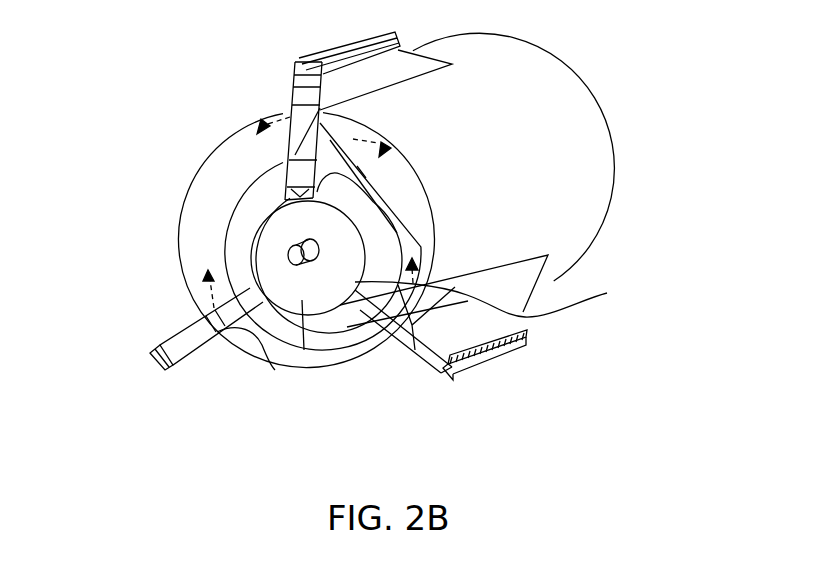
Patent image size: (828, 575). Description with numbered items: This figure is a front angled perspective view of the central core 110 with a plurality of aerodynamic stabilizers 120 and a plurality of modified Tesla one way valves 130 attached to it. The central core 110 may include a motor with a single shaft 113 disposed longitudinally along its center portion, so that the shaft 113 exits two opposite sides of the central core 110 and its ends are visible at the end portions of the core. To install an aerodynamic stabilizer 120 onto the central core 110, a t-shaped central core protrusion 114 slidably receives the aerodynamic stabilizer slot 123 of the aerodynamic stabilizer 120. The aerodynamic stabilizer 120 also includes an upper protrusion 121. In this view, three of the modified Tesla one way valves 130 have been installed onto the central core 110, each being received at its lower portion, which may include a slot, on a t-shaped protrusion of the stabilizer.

The central core 110 is at (277, 367).
The shaft 113 is at (288, 258).
The central core protrusion 114 is at (493, 314).
The aerodynamic stabilizer 120 is at (307, 87).
The upper protrusion 121 is at (495, 370).
The aerodynamic stabilizer slot 123 is at (350, 300).
The modified Tesla one way valve 130 is at (213, 182).